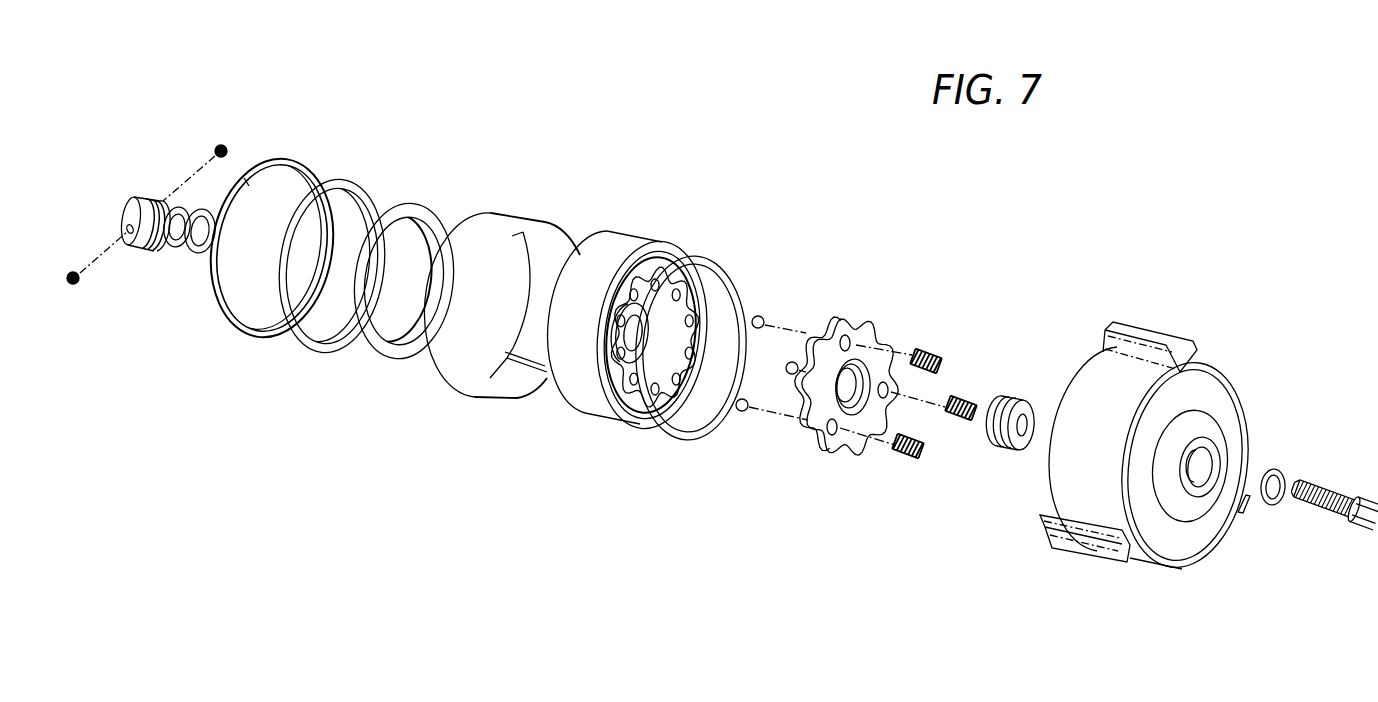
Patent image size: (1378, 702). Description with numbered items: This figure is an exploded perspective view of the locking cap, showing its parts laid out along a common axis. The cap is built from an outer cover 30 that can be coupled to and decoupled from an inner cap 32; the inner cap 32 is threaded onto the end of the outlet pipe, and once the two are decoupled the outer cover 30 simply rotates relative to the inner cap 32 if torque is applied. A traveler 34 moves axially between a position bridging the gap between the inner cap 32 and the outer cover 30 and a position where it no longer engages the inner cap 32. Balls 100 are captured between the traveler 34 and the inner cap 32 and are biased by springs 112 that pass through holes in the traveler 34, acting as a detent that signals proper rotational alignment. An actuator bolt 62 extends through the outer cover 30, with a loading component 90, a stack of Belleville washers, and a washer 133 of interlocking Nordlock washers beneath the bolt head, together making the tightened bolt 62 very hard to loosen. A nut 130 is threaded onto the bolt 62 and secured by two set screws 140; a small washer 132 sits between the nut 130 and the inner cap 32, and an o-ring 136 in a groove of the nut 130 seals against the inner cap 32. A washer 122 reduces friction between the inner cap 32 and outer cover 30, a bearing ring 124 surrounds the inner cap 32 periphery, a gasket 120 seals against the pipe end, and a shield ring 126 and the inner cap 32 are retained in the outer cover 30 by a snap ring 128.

The outer cover 30 is at (1117, 578).
The inner cap 32 is at (600, 438).
The traveler 34 is at (853, 465).
The actuator bolt 62 is at (1313, 527).
The loading component 90 is at (1040, 405).
The balls 100 is at (762, 317).
The springs 112 is at (928, 351).
The gasket 120 is at (425, 204).
The washer 122 is at (716, 272).
The bearing ring 124 is at (507, 223).
The shield ring 126 is at (367, 181).
The snap ring 128 is at (293, 162).
The nut 130 is at (138, 205).
The small washer 132 is at (200, 254).
The washer 133 is at (1268, 506).
The o-ring 136 is at (172, 248).
The set screws 140 is at (225, 145).